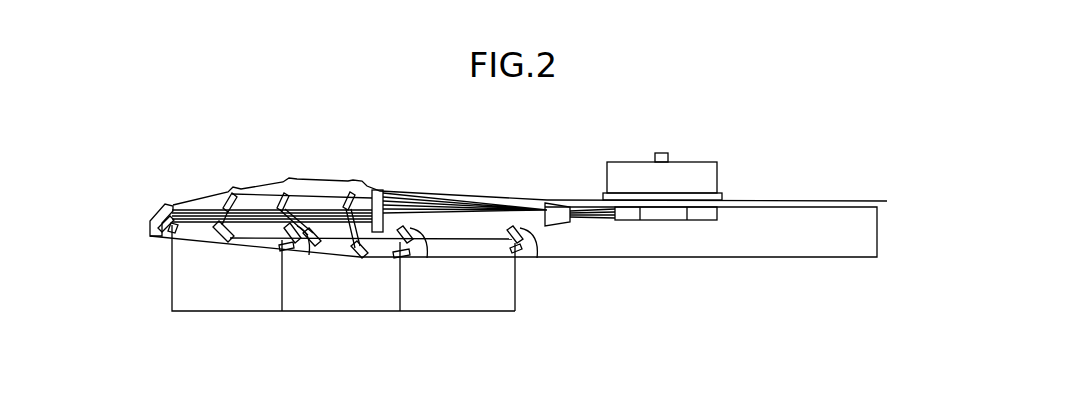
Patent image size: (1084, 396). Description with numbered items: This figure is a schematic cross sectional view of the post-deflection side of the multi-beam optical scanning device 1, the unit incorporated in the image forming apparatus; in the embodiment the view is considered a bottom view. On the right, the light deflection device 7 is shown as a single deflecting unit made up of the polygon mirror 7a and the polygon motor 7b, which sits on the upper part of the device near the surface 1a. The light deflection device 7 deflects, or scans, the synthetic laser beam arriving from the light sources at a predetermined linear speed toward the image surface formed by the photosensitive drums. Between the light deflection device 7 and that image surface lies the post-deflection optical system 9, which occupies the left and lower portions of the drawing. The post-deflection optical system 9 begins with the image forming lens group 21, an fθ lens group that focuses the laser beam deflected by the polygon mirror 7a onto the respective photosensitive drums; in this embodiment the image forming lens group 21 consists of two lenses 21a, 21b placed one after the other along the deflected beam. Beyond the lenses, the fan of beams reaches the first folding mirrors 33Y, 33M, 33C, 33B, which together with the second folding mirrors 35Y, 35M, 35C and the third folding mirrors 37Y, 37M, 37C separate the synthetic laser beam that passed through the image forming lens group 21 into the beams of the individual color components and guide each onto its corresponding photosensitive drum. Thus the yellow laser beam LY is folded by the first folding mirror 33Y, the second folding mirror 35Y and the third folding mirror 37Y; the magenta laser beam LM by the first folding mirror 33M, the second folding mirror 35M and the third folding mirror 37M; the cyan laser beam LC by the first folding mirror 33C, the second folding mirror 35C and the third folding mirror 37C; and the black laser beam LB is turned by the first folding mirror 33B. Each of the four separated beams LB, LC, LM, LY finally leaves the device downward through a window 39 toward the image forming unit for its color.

The multi-beam optical scanning device 1 is at (837, 203).
The upper wall of apparatus body 1a is at (805, 202).
The light deflection device 7 is at (669, 183).
The polygon mirror 7a is at (720, 218).
The polygon motor 7b is at (717, 179).
The post-deflection optical system 9 is at (402, 129).
The image forming lens group 21 is at (471, 178).
The lens 21a is at (390, 189).
The lens 21b is at (528, 193).
The first folding mirror 33B is at (173, 205).
The first folding mirror 33C is at (232, 192).
The first folding mirror 33M is at (282, 196).
The first folding mirror 33Y is at (350, 180).
The second folding mirror 35C is at (228, 241).
The second folding mirror 35M is at (318, 248).
The second folding mirror 35Y is at (362, 256).
The third folding mirror 37C is at (279, 246).
The third folding mirror 37M is at (420, 241).
The third folding mirror 37Y is at (527, 243).
The dustproof glass window 39 is at (175, 238).
The black laser beam LB is at (337, 283).
The cyan laser beam LC is at (284, 291).
The magenta laser beam LM is at (402, 292).
The yellow laser beam LY is at (516, 292).